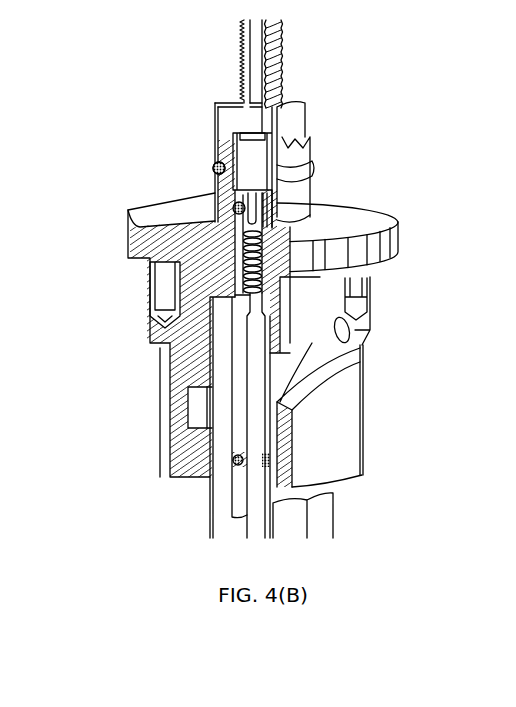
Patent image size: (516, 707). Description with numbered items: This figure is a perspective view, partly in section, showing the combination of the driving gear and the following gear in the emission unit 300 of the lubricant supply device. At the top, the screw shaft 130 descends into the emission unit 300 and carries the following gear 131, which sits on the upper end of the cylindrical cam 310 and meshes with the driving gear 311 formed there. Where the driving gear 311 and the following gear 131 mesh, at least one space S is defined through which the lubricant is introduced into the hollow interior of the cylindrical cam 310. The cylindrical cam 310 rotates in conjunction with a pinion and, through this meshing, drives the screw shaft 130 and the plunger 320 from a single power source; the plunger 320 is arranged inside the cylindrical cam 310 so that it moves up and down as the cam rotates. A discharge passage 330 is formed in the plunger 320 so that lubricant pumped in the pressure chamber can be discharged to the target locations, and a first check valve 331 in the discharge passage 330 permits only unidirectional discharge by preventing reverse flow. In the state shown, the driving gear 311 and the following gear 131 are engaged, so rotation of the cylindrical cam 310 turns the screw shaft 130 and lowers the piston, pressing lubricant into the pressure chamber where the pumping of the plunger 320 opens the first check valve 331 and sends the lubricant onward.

The screw shaft 130 is at (281, 42).
The following gear 131 is at (300, 122).
The driving gear 311 is at (304, 188).
The space S is at (212, 163).
The emission unit 300 is at (117, 514).
The cylindrical cam 310 is at (153, 360).
The first check valve 331 is at (278, 228).
The plunger 320 is at (212, 386).
The discharge passage 330 is at (255, 330).